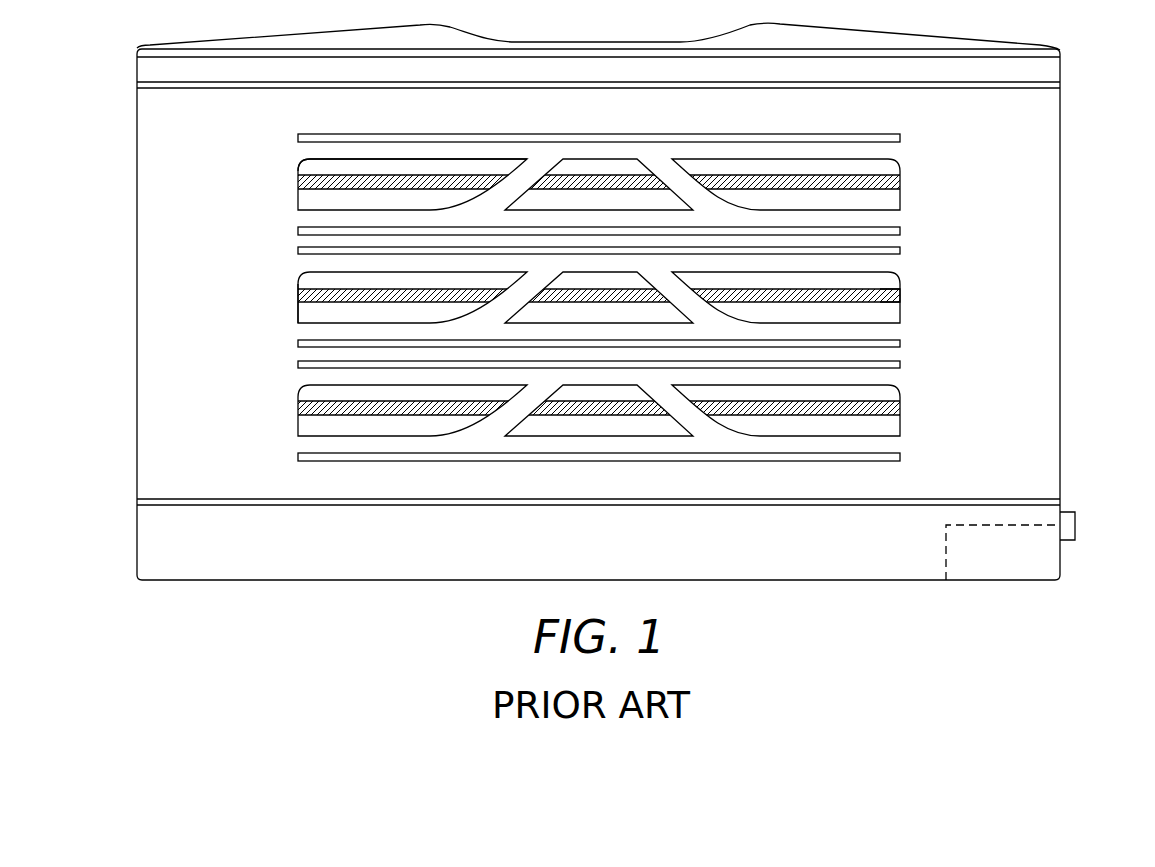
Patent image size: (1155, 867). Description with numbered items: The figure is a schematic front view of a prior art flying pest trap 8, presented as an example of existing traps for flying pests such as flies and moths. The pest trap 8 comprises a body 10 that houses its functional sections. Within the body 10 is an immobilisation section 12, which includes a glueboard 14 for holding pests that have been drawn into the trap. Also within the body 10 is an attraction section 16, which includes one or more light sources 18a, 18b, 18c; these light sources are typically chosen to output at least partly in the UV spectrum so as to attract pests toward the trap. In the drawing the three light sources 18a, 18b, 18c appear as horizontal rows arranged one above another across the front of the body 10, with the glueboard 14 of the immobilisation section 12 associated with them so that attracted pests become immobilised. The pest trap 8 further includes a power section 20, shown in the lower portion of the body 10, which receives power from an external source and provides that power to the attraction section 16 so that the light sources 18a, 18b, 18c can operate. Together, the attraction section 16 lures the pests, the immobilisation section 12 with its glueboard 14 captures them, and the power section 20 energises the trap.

The pest trap 8 is at (112, 134).
The body 10 is at (1061, 348).
The immobilisation section 12 is at (305, 165).
The glueboard 14 is at (299, 309).
The attraction section 16 is at (885, 302).
The light source 18a is at (896, 183).
The light source 18b is at (896, 296).
The light source 18c is at (897, 410).
The power section 20 is at (1058, 557).